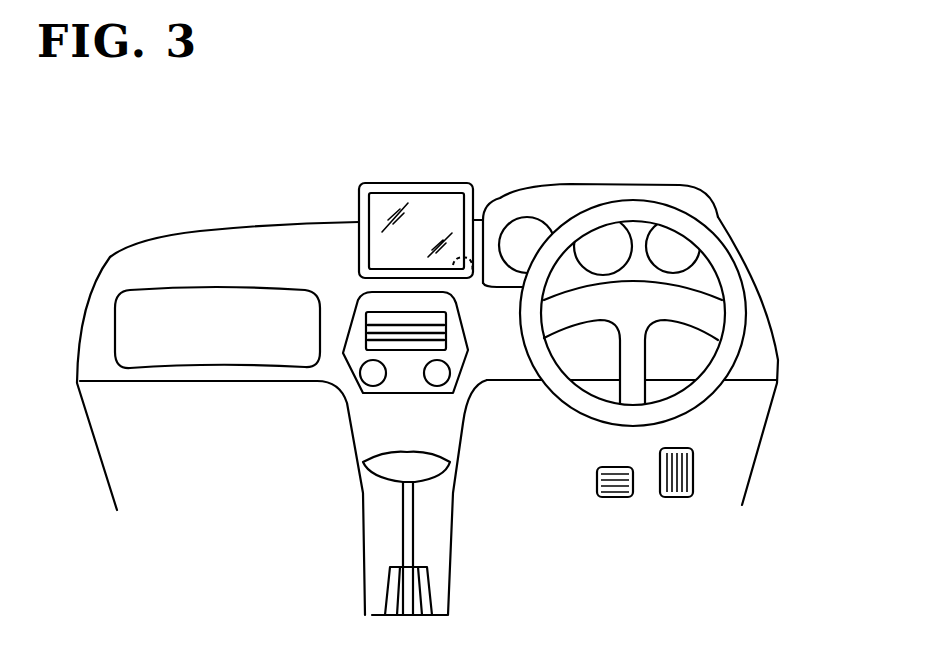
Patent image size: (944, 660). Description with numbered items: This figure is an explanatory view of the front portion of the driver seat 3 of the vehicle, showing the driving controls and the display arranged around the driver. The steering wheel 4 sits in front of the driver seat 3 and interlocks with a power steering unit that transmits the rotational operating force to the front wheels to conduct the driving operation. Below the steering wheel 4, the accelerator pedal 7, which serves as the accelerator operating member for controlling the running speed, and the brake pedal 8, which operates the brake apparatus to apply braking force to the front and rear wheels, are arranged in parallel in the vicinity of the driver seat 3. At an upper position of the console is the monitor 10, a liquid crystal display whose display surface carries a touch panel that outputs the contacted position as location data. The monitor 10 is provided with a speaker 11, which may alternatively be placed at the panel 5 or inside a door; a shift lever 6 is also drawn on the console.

The driver seat 3 is at (773, 225).
The steering wheel 4 is at (732, 287).
The panel 5 is at (675, 198).
The shift lever 6 is at (402, 463).
The accelerator pedal 7 is at (695, 475).
The brake pedal 8 is at (615, 467).
The monitor 10 is at (359, 212).
The speaker 11 is at (468, 283).